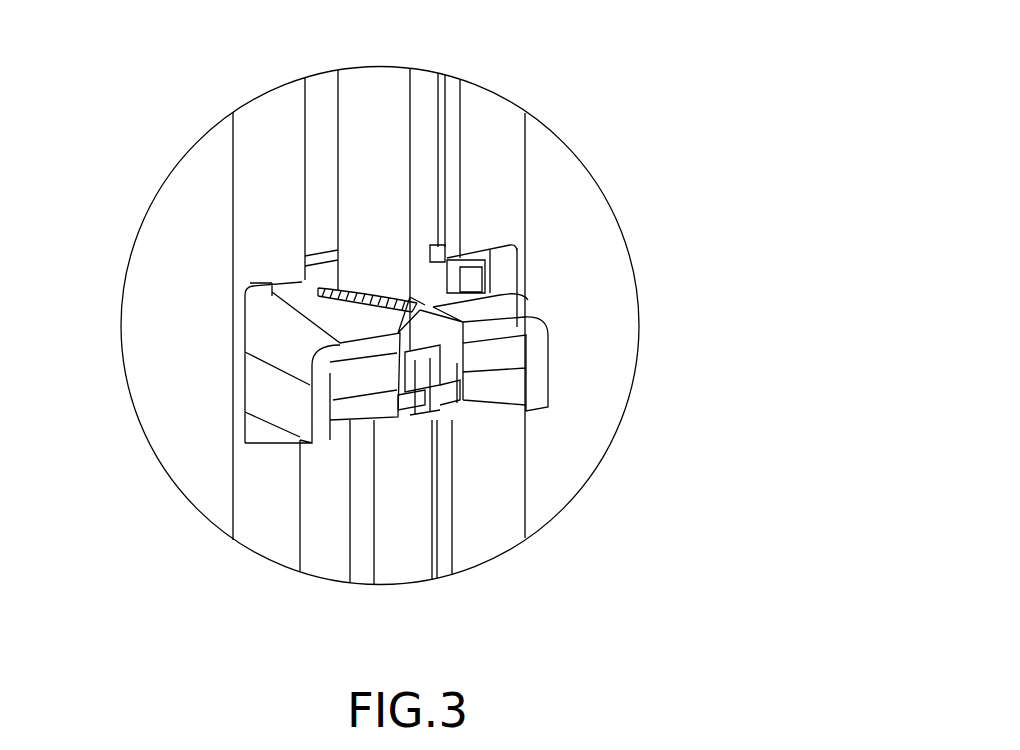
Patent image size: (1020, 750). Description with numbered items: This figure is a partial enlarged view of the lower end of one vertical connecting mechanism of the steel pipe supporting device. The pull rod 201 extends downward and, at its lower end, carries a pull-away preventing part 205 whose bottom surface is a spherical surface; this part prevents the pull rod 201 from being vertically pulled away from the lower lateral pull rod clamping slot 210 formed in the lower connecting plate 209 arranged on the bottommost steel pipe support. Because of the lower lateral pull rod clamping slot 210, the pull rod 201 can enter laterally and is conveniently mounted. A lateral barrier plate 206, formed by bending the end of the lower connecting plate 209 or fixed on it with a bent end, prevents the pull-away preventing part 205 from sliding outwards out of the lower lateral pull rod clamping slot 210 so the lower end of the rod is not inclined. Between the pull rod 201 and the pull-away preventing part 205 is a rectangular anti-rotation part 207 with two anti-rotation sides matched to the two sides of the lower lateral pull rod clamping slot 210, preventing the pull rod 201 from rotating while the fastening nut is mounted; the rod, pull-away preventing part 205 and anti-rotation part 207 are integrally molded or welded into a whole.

The pull rod 201 is at (365, 163).
The pull-away preventing part 205 is at (410, 372).
The lateral barrier plate 206 is at (493, 383).
The anti-rotation part 207 is at (415, 310).
The lower connecting plate 209 is at (275, 385).
The lower lateral pull rod clamping slot 210 is at (410, 333).